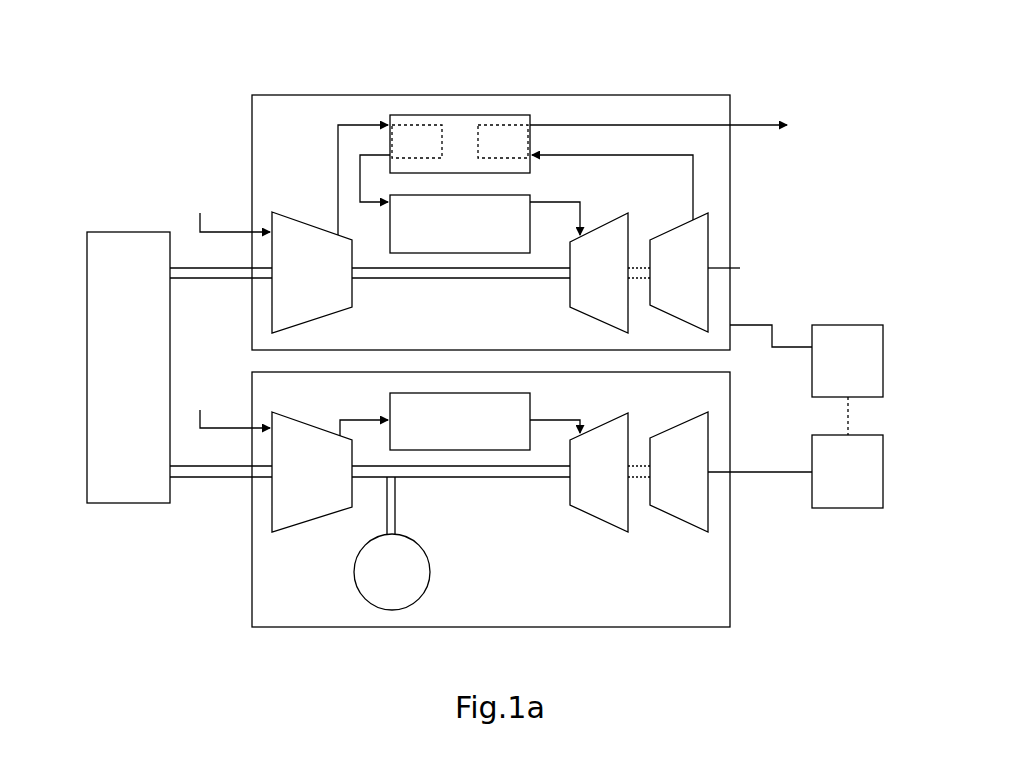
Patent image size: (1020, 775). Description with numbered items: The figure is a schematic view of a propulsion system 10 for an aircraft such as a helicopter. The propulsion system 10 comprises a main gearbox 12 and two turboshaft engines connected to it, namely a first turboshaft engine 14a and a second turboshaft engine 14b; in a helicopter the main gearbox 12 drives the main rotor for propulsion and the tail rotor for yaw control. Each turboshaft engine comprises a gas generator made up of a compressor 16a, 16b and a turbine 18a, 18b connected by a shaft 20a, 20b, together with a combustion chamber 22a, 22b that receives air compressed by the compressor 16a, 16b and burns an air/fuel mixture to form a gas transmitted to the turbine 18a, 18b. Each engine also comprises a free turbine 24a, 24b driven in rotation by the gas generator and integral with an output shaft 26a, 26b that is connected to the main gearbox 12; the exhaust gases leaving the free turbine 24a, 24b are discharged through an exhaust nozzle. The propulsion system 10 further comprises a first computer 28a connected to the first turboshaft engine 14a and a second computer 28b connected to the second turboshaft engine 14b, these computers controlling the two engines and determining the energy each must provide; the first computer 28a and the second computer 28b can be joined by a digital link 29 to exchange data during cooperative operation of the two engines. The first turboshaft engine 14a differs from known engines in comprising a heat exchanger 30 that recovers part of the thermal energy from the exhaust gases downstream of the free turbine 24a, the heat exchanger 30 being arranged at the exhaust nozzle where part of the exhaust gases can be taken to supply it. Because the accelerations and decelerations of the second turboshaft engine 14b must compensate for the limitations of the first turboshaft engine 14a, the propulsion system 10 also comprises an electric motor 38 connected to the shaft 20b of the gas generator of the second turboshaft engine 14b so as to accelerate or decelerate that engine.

The propulsion system 10 is at (171, 547).
The main gearbox 12 is at (87, 388).
The first turboshaft engine 14a is at (678, 95).
The second turboshaft engine 14b is at (732, 627).
The compressor 16a is at (310, 226).
The compressor 16b is at (315, 520).
The turbine 18a is at (598, 228).
The turbine 18b is at (590, 515).
The shaft 20a is at (478, 279).
The shaft 20b is at (508, 478).
The combustion chamber 22a is at (432, 254).
The combustion chamber 22b is at (448, 450).
The free turbine 24a is at (740, 268).
The free turbine 24b is at (680, 520).
The output shaft 26a is at (217, 279).
The output shaft 26b is at (202, 478).
The first computer 28a is at (848, 325).
The second computer 28b is at (848, 508).
The communication link between computers 29 is at (848, 414).
The heat exchanger 30 is at (463, 115).
The electric motor 38 is at (432, 565).